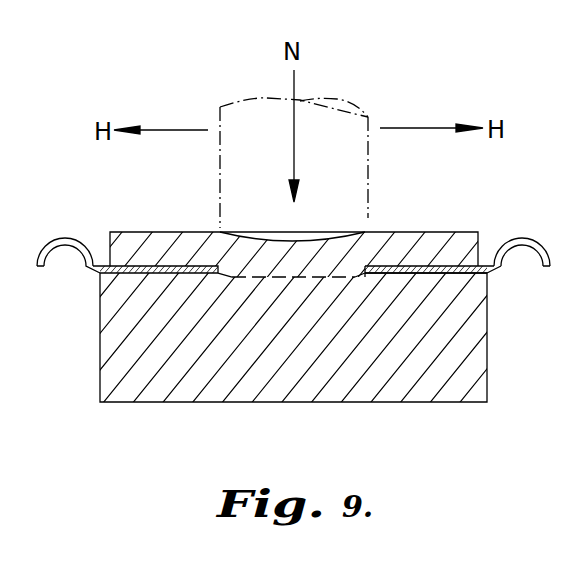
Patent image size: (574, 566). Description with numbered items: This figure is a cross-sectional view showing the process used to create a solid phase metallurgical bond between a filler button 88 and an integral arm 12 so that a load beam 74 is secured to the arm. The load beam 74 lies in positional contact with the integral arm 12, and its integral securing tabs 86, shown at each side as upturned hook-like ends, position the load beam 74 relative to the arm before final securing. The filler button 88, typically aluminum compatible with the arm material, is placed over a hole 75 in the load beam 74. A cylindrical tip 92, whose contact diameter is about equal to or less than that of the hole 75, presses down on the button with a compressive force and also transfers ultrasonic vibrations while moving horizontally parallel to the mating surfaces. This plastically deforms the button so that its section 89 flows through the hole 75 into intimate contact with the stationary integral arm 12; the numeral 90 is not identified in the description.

The integral arm 12 is at (152, 385).
The load beam 74 is at (455, 270).
The hole 75 is at (323, 278).
The securing tabs 86 is at (55, 267).
The filler button 88 is at (142, 242).
The section 89 is at (275, 258).
The gap 90 is at (400, 211).
The cylindrical tip 92 is at (247, 117).